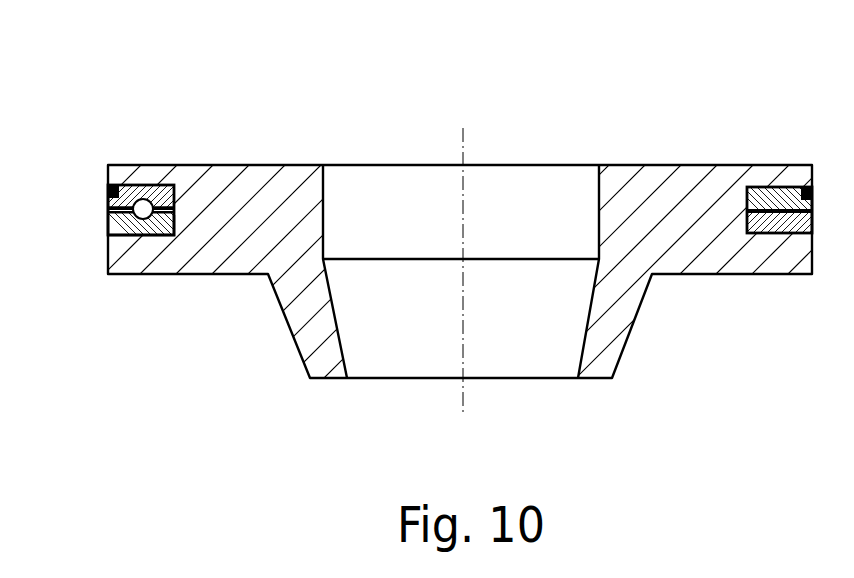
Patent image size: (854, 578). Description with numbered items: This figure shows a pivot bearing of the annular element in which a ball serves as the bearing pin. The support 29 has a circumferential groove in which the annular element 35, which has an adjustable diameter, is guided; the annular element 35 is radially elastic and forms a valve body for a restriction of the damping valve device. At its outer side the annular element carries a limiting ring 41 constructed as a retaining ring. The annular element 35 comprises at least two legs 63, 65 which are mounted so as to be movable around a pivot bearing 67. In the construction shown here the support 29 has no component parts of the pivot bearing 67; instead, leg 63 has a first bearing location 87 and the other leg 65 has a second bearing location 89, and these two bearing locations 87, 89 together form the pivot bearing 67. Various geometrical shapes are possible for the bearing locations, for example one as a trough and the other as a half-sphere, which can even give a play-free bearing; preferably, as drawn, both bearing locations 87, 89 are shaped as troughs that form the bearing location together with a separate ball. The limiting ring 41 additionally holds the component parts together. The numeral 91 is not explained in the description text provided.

The support 29 is at (635, 198).
The annular element 35 is at (150, 197).
The limiting ring 41 is at (114, 188).
The leg 63 is at (170, 236).
The leg 65 is at (174, 186).
The pivot bearing 67 is at (150, 230).
The first bearing location 87 is at (151, 222).
The second bearing location 89 is at (143, 199).
The lower raceway 91 is at (137, 230).